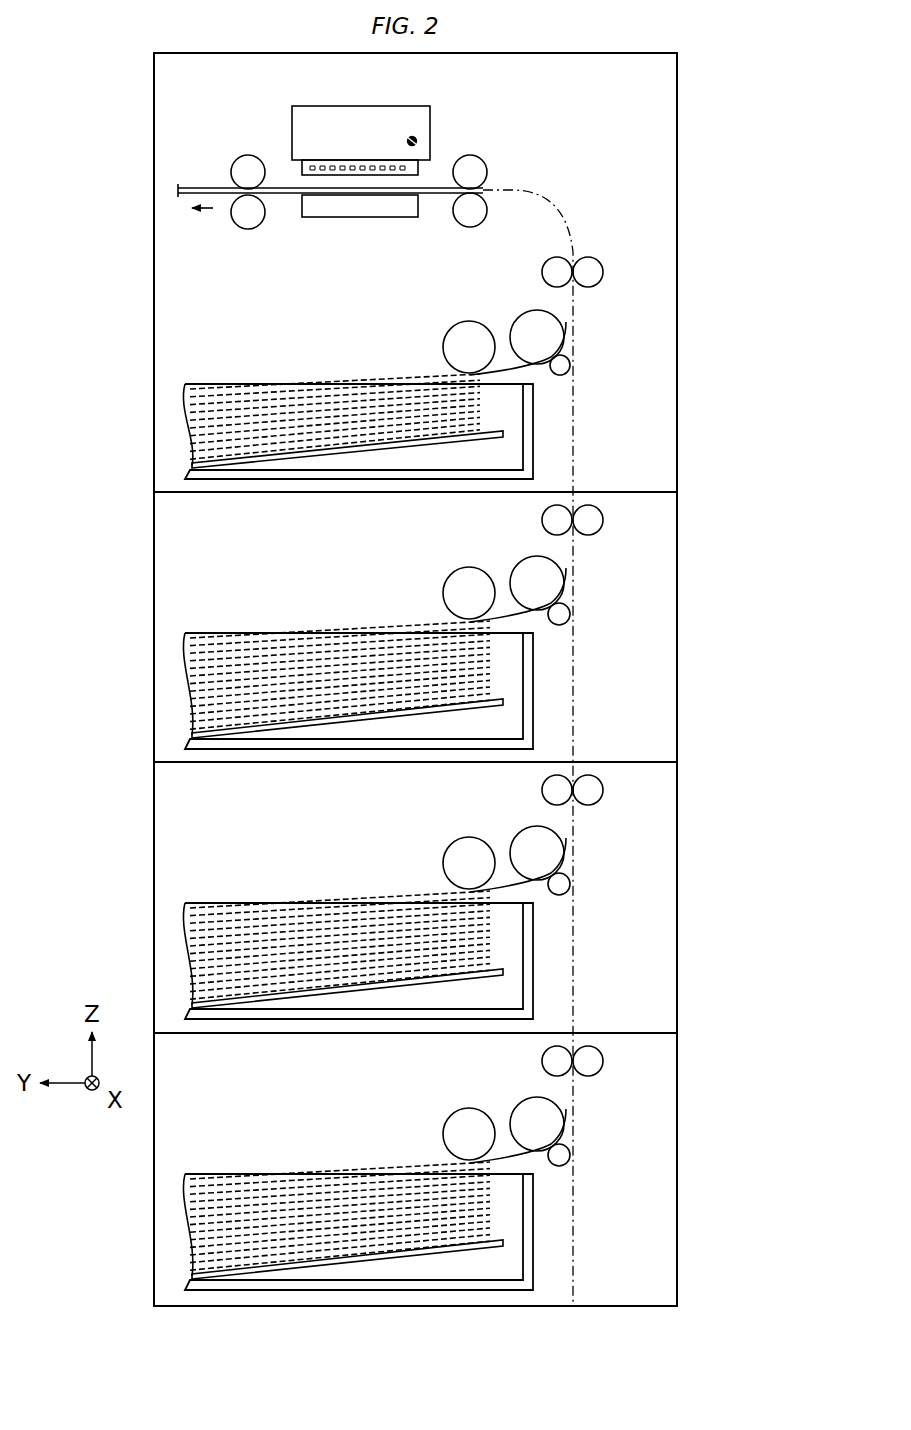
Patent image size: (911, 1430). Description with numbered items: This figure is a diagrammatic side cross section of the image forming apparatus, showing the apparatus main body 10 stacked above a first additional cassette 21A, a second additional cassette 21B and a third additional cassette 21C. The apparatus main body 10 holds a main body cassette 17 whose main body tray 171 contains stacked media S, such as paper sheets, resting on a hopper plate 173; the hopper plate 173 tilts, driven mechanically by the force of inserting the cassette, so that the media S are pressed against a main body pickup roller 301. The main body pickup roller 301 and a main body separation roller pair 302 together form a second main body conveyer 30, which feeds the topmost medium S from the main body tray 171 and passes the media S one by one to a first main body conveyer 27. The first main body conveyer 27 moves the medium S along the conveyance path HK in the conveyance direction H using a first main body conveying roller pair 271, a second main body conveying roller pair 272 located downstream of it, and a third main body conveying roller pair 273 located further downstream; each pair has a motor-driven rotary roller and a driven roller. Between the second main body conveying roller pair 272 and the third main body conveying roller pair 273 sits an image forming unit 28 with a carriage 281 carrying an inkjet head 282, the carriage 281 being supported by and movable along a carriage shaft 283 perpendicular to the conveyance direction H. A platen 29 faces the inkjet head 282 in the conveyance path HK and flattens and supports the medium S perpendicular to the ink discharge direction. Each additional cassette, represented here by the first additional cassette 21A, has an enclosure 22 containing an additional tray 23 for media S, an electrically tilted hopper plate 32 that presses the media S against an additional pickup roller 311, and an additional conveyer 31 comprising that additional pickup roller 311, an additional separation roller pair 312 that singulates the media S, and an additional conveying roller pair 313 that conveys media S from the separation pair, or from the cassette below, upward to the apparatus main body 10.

The apparatus main body 10 is at (680, 295).
The main body cassette 17 is at (318, 399).
The main body tray 171 is at (300, 386).
The hopper plate 173 is at (448, 445).
The first additional cassette 21A is at (684, 520).
The second additional cassette 21B is at (684, 790).
The third additional cassette 21C is at (684, 1061).
The enclosure 22 is at (680, 568).
The additional tray 23 is at (300, 634).
The first main body conveyer 27 is at (610, 218).
The first main body conveying roller pair 271 is at (604, 274).
The second main body conveying roller pair 272 is at (470, 228).
The third main body conveying roller pair 273 is at (249, 230).
The image forming unit 28 is at (361, 117).
The carriage 281 is at (360, 106).
The inkjet head 282 is at (303, 166).
The carriage shaft 283 is at (408, 138).
The platen 29 is at (357, 218).
The second main body conveyer 30 is at (544, 320).
The main body pickup roller 301 is at (468, 321).
The main body separation roller pair 302 is at (534, 310).
The additional conveyer 31 is at (558, 830).
The additional pickup roller 311 is at (468, 567).
The additional separation roller pair 312 is at (533, 556).
The additional conveying roller pair 313 is at (604, 520).
The hopper plate 32 is at (448, 712).
The medium S is at (197, 186).
The conveyance direction H is at (200, 215).
The conveyance path HK is at (536, 186).